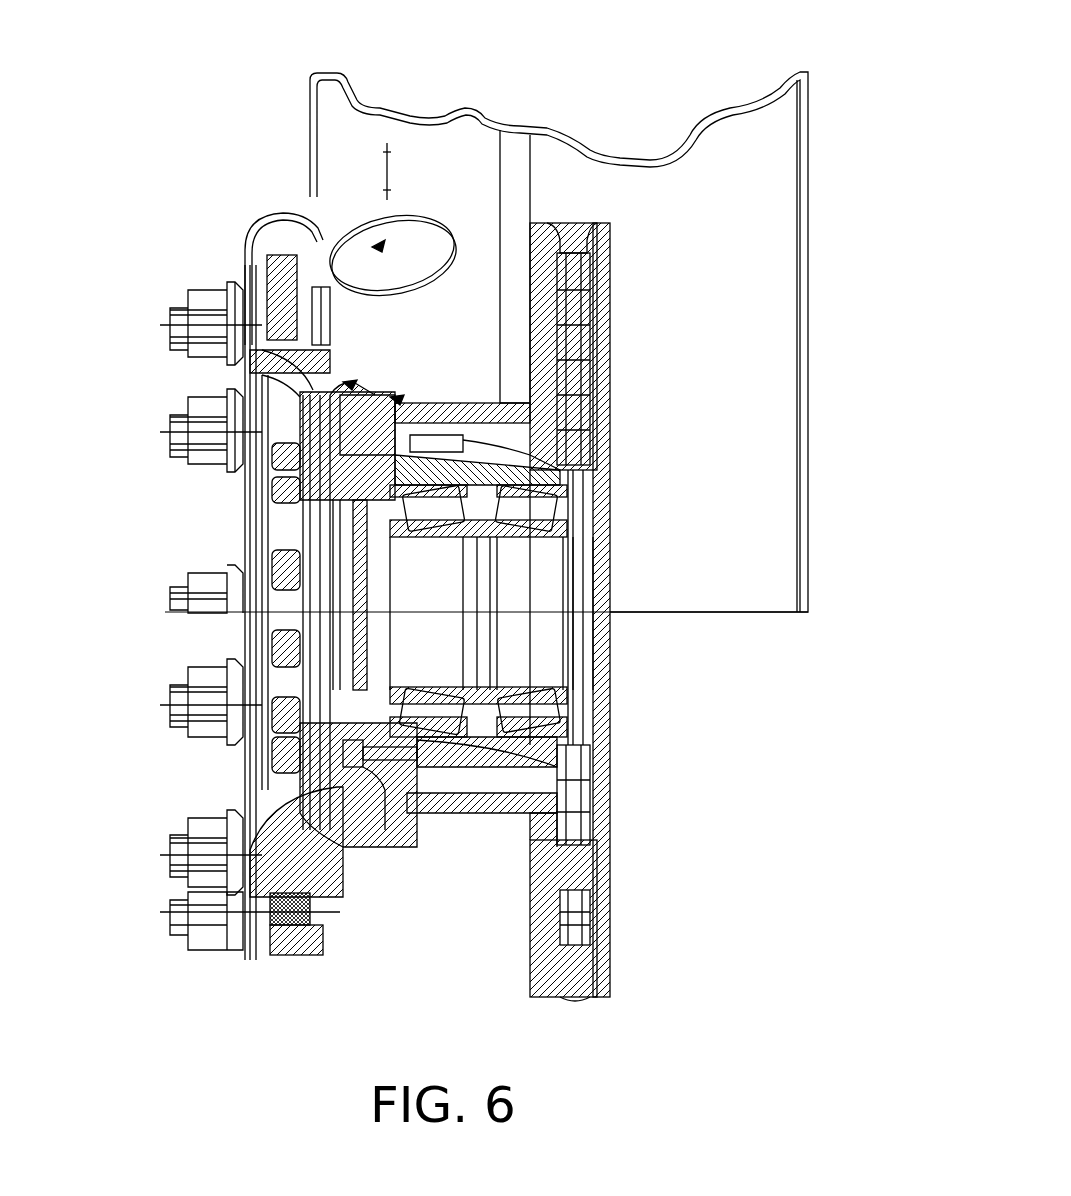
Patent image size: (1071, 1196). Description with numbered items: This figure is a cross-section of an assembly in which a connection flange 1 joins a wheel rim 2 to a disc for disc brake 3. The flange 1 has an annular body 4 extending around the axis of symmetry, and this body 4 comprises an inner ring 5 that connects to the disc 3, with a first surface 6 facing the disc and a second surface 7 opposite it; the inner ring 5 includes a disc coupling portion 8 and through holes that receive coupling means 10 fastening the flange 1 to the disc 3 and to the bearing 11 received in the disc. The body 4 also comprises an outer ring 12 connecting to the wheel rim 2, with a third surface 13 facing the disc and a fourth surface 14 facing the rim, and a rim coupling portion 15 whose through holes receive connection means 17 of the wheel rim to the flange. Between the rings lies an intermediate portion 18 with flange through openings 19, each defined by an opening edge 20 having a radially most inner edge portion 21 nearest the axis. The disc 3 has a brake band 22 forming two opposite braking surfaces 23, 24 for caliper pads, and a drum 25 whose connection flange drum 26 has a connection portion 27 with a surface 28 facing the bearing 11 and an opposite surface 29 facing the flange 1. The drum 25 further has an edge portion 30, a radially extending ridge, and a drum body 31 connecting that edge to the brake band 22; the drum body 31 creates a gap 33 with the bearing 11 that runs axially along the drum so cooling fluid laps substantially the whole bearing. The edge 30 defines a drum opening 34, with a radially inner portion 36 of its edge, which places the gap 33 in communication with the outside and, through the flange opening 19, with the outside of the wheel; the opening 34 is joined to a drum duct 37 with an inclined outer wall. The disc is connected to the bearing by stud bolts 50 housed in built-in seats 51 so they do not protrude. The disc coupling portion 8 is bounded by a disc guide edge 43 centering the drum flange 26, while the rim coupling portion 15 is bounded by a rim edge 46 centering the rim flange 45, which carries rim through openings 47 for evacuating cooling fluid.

The connection flange 1 is at (300, 300).
The wheel rim 2 is at (432, 120).
The disc for disc brake 3 is at (612, 248).
The annular body 4 is at (310, 445).
The inner ring 5 is at (290, 775).
The first surface 6 is at (350, 880).
The second surface 7 is at (300, 795).
The disc coupling portion 8 is at (345, 880).
The coupling means 10 is at (270, 645).
The bearing 11 is at (590, 700).
The outer ring 12 is at (230, 305).
The third surface 13 is at (273, 315).
The fourth surface 14 is at (207, 307).
The rim coupling portion 15 is at (300, 335).
The connection means of the wheel rim to the flange 17 is at (200, 300).
The intermediate portion 18 is at (300, 397).
The flange through openings 19 is at (144, 417).
The opening edge 20 is at (300, 392).
The radially most inner edge portion 21 is at (340, 390).
The brake band 22 is at (545, 245).
The braking surface 23 is at (612, 347).
The braking surface 24 is at (528, 935).
The drum 25 is at (477, 813).
The connection flange drum 26 is at (395, 395).
The connection portion 27 is at (330, 500).
The surface facing the bearing 28 is at (440, 423).
The opposite surface 29 is at (300, 480).
The edge portion of drum 30 is at (385, 380).
The drum body 31 is at (470, 860).
The gap 33 is at (830, 462).
The drum opening 34 is at (350, 385).
The radially inner portion 36 is at (280, 437).
The drum duct 37 is at (412, 408).
The disc guide edge 43 is at (273, 743).
The rim flange 45 is at (258, 272).
The rim edge 46 is at (200, 865).
The rim through openings 47 is at (337, 260).
The stud bolts 50 is at (400, 805).
The built-in seats 51 is at (370, 880).